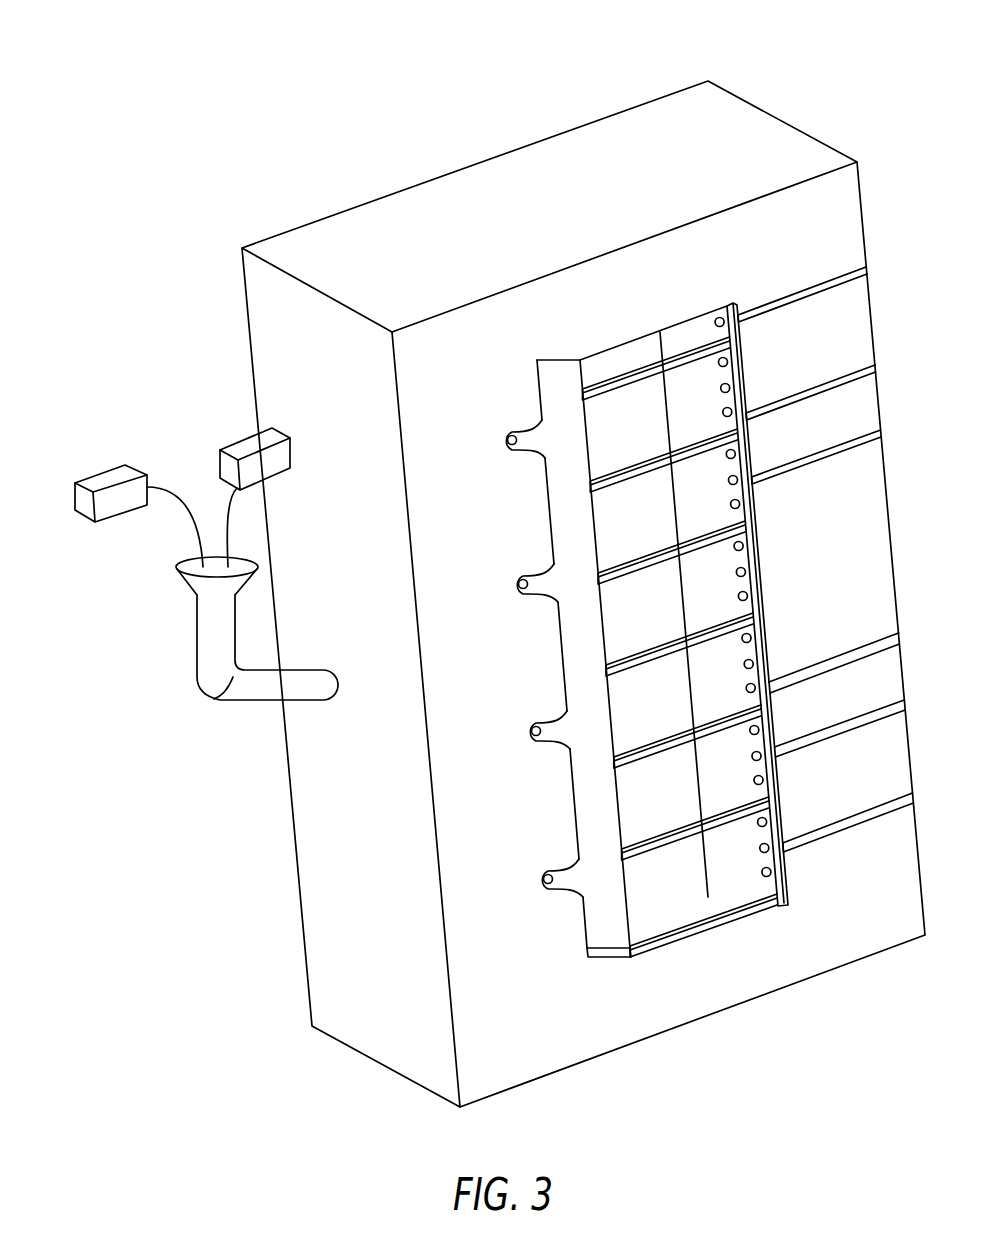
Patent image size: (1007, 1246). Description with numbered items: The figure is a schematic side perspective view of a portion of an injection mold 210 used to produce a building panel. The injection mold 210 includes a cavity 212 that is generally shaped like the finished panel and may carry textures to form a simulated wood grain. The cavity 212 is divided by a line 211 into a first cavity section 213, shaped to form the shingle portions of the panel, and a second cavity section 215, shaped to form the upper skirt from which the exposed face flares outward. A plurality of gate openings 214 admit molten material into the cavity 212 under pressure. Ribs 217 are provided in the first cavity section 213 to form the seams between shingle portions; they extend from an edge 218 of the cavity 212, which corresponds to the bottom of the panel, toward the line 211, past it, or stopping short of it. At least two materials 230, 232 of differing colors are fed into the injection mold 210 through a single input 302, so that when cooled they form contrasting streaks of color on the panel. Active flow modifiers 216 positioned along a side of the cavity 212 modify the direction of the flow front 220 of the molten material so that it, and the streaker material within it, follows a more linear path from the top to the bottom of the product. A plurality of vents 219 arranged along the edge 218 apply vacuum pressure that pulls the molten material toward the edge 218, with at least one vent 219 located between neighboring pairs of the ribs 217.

The injection mold 210 is at (849, 50).
The line 211 is at (578, 366).
The cavity 212 is at (728, 402).
The first cavity section 213 is at (756, 878).
The gate openings 214 is at (510, 449).
The second cavity section 215 is at (578, 679).
The active flow modifiers 216 is at (756, 688).
The ribs 217 is at (683, 353).
The edge 218 is at (777, 783).
The vents 219 is at (851, 271).
The flow front 220 is at (708, 898).
The material 230 is at (85, 521).
The material 232 is at (293, 462).
The input 302 is at (220, 697).